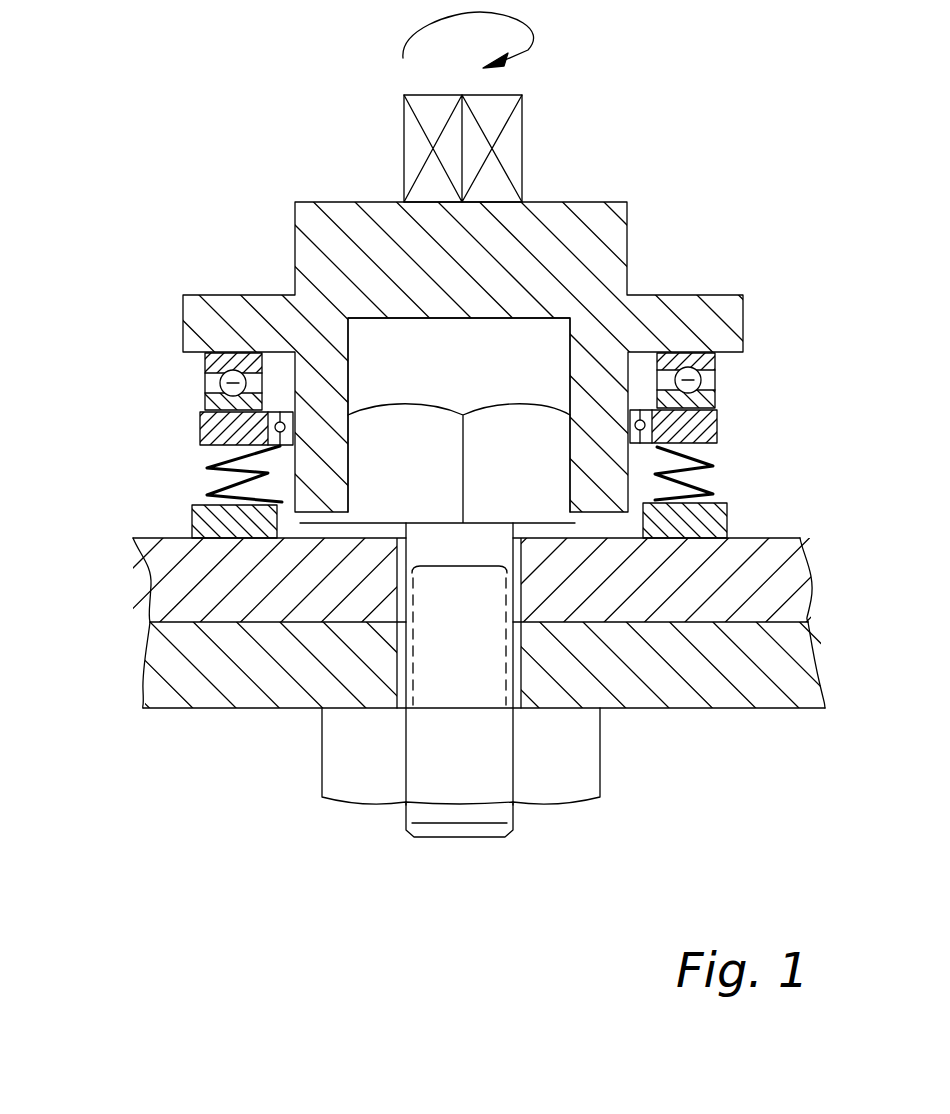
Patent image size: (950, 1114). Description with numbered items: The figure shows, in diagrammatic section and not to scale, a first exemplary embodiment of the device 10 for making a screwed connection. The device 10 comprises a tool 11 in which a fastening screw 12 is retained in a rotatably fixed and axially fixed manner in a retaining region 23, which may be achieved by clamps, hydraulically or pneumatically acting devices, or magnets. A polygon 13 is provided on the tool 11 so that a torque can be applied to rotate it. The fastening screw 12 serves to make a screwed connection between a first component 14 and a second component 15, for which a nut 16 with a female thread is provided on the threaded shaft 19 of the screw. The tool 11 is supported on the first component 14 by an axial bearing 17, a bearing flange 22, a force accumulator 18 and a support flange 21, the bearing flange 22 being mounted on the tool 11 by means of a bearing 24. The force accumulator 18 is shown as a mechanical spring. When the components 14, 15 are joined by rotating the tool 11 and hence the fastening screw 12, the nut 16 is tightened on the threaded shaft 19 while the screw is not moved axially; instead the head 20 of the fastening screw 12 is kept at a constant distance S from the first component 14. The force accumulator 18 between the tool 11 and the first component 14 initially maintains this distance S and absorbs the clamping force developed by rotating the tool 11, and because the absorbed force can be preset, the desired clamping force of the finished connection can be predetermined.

The device 10 is at (652, 120).
The tool 11 is at (593, 225).
The fastening screw 12 is at (527, 397).
The polygon 13 is at (505, 143).
The first component 14 is at (763, 563).
The second component 15 is at (777, 663).
The nut 16 is at (563, 775).
The axial bearing 17 is at (700, 378).
The force accumulator 18 is at (758, 533).
The threaded shaft 19 is at (470, 838).
The head 20 is at (537, 478).
The support flange 21 is at (190, 507).
The bearing flange 22 is at (200, 430).
The retaining region 23 is at (345, 472).
The bearing 24 is at (278, 410).
The distance S is at (91, 527).